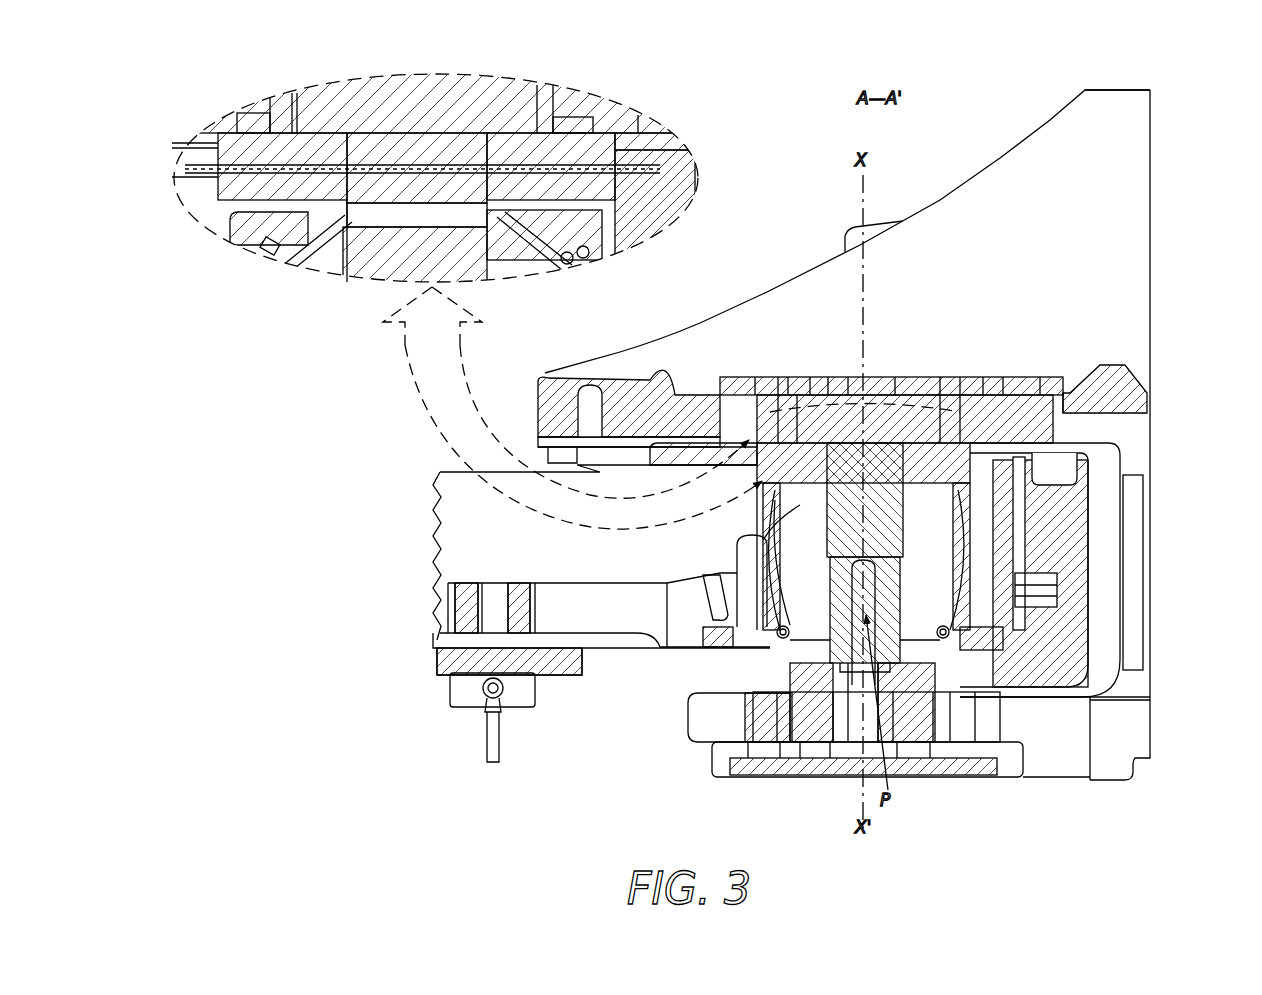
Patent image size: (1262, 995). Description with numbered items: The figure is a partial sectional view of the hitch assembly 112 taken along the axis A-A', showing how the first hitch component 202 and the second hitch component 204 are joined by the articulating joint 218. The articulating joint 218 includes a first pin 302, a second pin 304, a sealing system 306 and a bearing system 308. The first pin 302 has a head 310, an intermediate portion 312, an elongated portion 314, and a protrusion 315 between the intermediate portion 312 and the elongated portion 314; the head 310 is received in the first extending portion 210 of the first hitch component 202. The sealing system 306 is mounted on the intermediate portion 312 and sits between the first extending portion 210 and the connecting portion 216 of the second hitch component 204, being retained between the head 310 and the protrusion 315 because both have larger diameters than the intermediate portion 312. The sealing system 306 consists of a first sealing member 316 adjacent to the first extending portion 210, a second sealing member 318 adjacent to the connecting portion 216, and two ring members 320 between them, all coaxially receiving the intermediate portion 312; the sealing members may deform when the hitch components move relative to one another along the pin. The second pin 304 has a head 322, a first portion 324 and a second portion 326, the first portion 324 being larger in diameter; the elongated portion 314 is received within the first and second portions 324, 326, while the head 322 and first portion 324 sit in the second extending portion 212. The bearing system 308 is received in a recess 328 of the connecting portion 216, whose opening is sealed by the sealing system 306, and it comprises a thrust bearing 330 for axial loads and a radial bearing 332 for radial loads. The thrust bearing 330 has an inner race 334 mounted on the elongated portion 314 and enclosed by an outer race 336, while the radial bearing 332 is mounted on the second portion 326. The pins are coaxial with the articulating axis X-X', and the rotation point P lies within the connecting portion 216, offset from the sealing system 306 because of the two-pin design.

The hitch assembly 112 is at (818, 133).
The first hitch component 202 is at (1117, 173).
The second hitch component 204 is at (478, 532).
The first extending portion 210 is at (185, 160).
The second extending portion 212 is at (698, 715).
The connecting portion 216 is at (215, 212).
The articulating joint 218 is at (1032, 532).
The first pin 302 is at (335, 252).
The second pin 304 is at (785, 670).
The sealing system 306 is at (205, 197).
The bearing system 308 is at (758, 575).
The head 310 is at (398, 100).
The intermediate portion 312 is at (466, 165).
The elongated portion 314 is at (463, 263).
The protrusion 315 is at (372, 212).
The first sealing member 316 is at (240, 148).
The second sealing member 318 is at (249, 190).
The ring members 320 is at (215, 160).
The head 322 is at (967, 767).
The first portion 324 is at (913, 678).
The second portion 326 is at (913, 617).
The recess 328 is at (760, 515).
The thrust bearing 330 is at (730, 478).
The radial bearing 332 is at (782, 635).
The inner race 334 is at (920, 537).
The outer race 336 is at (970, 535).